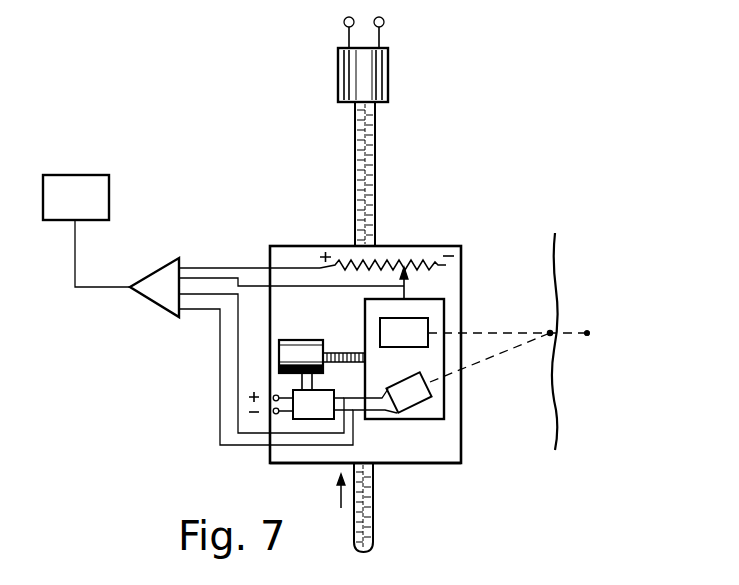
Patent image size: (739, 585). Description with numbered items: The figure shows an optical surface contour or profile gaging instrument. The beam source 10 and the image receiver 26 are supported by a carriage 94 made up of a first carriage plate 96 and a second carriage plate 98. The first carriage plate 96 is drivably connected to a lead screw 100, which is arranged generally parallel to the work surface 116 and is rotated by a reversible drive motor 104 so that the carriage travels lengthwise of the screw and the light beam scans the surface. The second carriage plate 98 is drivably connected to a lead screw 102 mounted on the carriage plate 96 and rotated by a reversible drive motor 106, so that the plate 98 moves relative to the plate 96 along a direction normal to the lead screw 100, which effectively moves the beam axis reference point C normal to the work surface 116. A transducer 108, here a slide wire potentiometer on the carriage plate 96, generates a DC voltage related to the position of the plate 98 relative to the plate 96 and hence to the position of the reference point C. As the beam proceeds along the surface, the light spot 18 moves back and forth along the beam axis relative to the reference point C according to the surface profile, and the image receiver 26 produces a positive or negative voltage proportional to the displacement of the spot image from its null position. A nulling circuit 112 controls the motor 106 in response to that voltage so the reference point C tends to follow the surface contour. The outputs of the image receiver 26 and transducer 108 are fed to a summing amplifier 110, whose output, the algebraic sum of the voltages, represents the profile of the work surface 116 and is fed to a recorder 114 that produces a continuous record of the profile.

The beam source 10 is at (412, 343).
The light spot 18 is at (548, 331).
The image receiver 26 is at (408, 392).
The carriage 94 is at (440, 440).
The first carriage plate 96 is at (423, 455).
The second carriage plate 98 is at (432, 413).
The lead screw 100 is at (374, 518).
The lead screw 102 is at (337, 352).
The reversible drive motor 104 is at (388, 80).
The reversible drive motor 106 is at (300, 340).
The transducer 108 is at (399, 260).
The summing amplifier 110 is at (160, 270).
The nulling circuit 112 is at (326, 413).
The recorder 114 is at (100, 192).
The work surface 116 is at (555, 244).
The beam axis reference point C is at (588, 330).